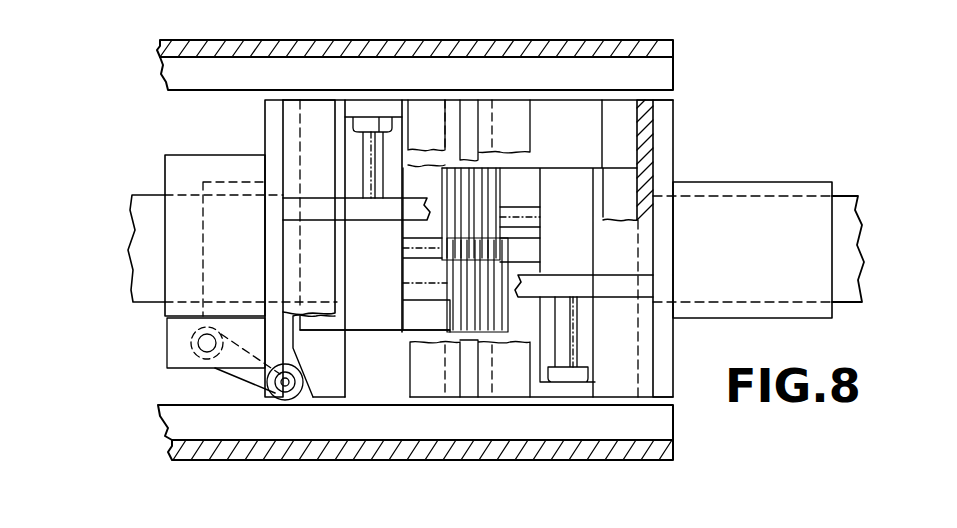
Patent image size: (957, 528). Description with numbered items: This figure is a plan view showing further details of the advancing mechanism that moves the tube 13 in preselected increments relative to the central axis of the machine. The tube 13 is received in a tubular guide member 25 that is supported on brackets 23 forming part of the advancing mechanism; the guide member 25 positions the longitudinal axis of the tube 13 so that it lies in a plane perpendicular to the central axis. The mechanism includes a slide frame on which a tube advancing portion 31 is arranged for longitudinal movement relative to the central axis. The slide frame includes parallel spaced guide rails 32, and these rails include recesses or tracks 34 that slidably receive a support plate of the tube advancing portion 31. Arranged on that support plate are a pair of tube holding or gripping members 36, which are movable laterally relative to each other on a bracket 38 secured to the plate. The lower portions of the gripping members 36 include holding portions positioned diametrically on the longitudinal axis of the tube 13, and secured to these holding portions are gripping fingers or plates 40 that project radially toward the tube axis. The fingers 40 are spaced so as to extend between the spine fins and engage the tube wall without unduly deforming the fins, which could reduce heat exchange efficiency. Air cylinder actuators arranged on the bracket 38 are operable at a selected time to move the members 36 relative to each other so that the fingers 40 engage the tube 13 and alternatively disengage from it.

The tube advancing portion 31 is at (116, 150).
The guide rails 32 is at (630, 40).
The tracks 34 is at (673, 62).
The brackets 23 is at (265, 126).
The tubular guide member 25 is at (848, 205).
The gripping members 36 is at (548, 176).
The gripping fingers 40 is at (535, 266).
The bracket 38 is at (371, 209).
The tube 13 is at (425, 262).